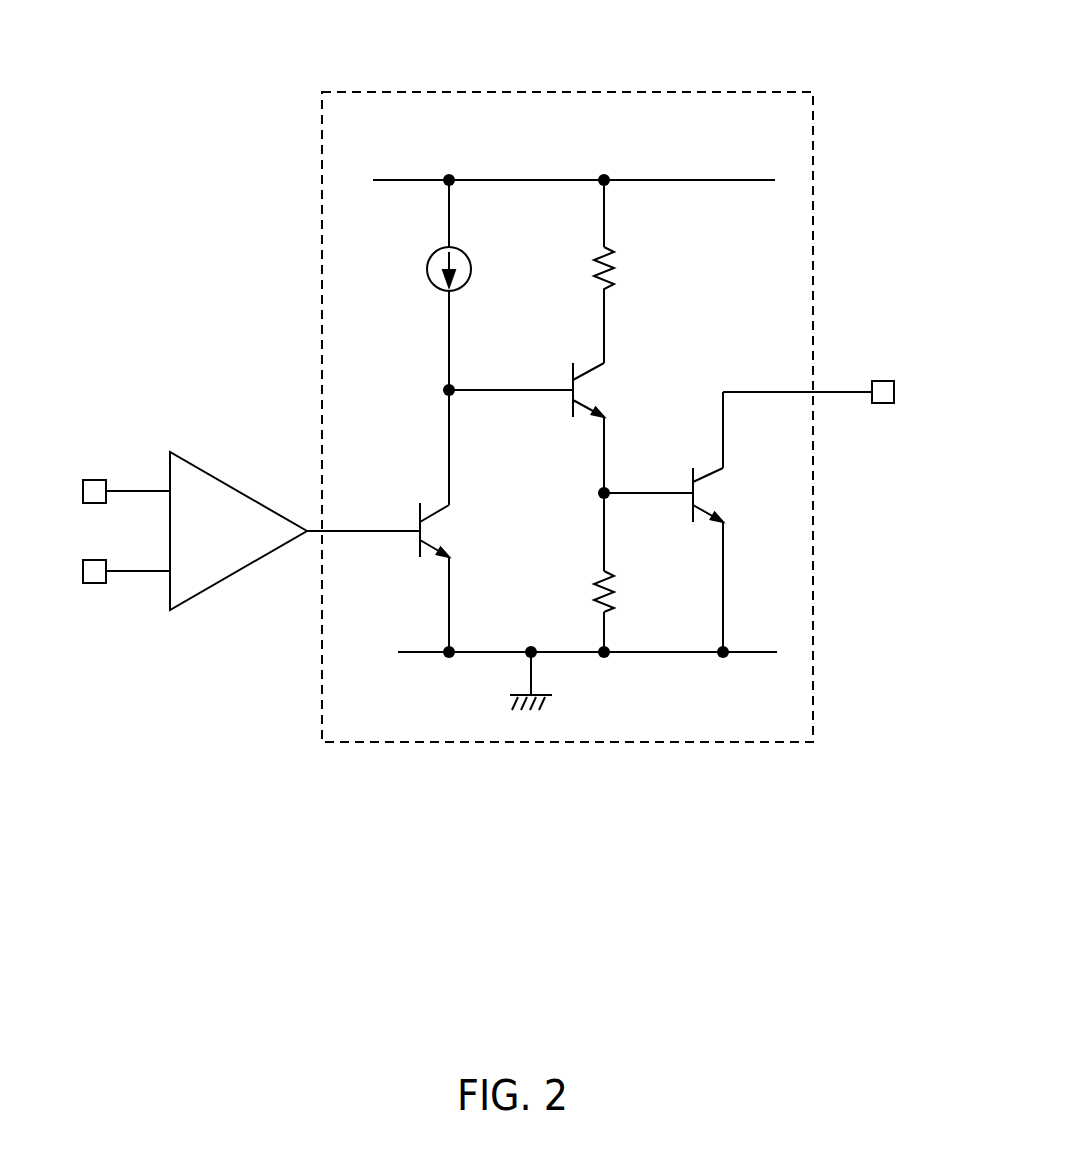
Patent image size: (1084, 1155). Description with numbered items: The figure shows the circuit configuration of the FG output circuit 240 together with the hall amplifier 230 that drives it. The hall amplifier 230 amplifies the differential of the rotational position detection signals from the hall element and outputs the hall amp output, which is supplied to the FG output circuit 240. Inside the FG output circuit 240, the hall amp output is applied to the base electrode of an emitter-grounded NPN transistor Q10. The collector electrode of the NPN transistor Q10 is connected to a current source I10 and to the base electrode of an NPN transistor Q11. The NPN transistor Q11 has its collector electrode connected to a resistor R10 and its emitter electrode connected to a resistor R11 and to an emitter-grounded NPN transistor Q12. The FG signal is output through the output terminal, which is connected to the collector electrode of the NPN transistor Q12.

The hall amplifier 230 is at (222, 481).
The FG output circuit 240 is at (609, 378).
The emitter-grounded NPN transistor Q10 is at (401, 521).
The NPN transistor Q11 is at (549, 428).
The emitter-grounded NPN transistor Q12 is at (758, 500).
The resistor R10 is at (631, 271).
The resistor R11 is at (630, 572).
The current source I10 is at (471, 285).